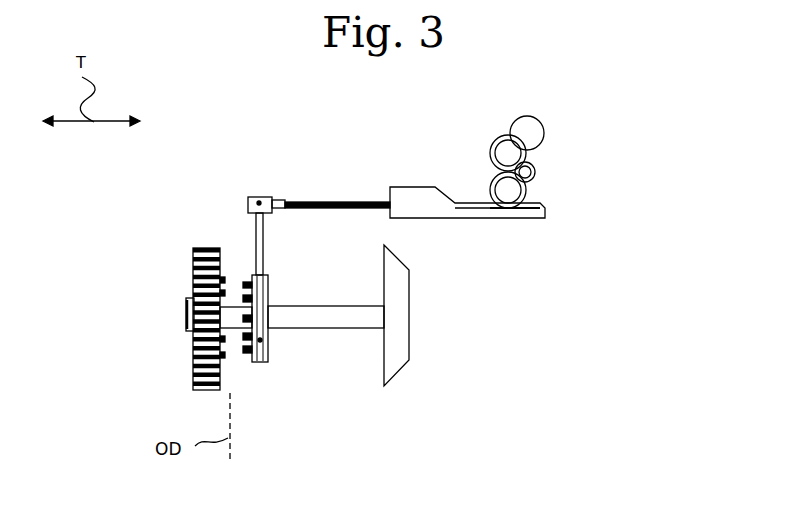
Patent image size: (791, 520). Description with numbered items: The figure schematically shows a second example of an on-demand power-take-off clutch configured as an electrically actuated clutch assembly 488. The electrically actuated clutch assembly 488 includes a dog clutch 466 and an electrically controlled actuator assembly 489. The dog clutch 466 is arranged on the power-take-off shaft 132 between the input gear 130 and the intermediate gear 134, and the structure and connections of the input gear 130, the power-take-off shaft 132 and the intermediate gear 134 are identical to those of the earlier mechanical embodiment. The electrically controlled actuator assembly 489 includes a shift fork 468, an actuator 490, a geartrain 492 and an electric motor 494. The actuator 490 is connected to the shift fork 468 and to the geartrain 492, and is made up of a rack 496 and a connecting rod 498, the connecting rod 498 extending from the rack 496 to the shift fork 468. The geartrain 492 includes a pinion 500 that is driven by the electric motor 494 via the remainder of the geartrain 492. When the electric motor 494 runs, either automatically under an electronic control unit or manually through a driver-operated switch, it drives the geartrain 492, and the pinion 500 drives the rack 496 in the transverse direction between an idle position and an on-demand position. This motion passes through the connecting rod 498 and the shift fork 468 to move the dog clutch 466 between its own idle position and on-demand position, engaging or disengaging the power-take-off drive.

The input gear 130 is at (193, 362).
The power-take-off shaft 132 is at (364, 304).
The intermediate gear 134 is at (398, 372).
The dog clutch 466 is at (260, 340).
The shift fork 468 is at (266, 248).
The electrically actuated clutch assembly 488 is at (592, 118).
The electrically controlled actuator assembly 489 is at (207, 203).
The actuator 490 is at (417, 127).
The geartrain 492 is at (477, 135).
The electric motor 494 is at (523, 115).
The rack 496 is at (412, 186).
The connecting rod 498 is at (325, 200).
The pinion 500 is at (540, 196).